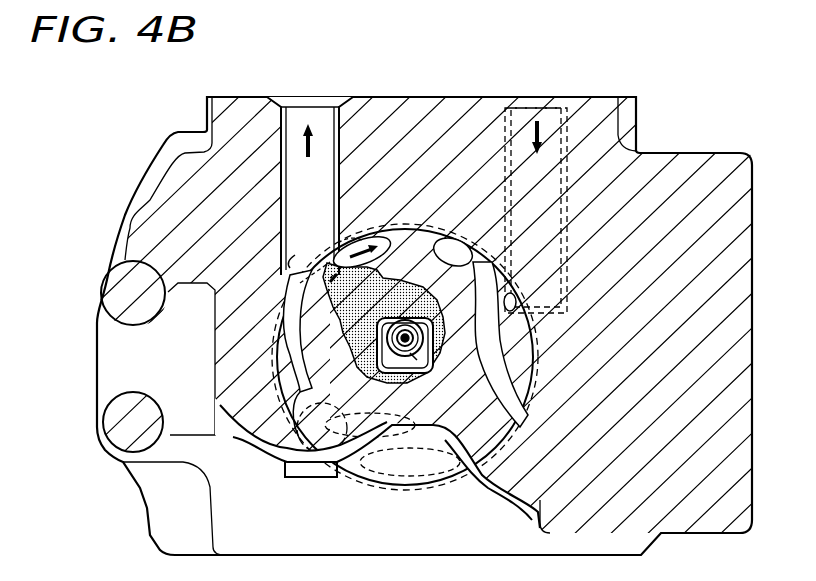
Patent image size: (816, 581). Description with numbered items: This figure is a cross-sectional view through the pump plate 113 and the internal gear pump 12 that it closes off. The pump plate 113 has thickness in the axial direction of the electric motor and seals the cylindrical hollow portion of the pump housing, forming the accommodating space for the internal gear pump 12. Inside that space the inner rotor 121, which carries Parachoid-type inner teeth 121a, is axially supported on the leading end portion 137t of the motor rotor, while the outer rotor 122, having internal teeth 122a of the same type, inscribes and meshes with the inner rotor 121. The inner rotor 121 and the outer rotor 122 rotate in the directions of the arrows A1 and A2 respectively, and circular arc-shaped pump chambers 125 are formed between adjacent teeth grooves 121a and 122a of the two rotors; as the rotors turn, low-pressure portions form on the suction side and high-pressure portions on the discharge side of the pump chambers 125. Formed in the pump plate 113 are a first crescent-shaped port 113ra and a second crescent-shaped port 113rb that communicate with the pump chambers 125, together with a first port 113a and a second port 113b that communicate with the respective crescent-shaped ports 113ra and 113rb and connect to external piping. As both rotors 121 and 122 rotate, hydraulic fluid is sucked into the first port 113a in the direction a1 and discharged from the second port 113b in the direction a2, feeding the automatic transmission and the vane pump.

The pump plate 113 is at (668, 128).
The first port 113a is at (516, 92).
The second port 113b is at (292, 92).
The first crescent-shaped port 113ra is at (440, 240).
The second crescent-shaped port 113rb is at (364, 240).
The internal gear pump 12 is at (325, 495).
The inner rotor 121 is at (305, 290).
The inner teeth 121a is at (290, 392).
The outer rotor 122 is at (270, 447).
The internal teeth 122a is at (297, 340).
The pump chambers 125 is at (300, 283).
The leading end portion 137t is at (412, 355).
The suction direction a1 is at (541, 134).
The discharge direction a2 is at (315, 143).
The rotation direction of inner rotor A1 is at (330, 273).
The rotation direction of outer rotor A2 is at (347, 243).